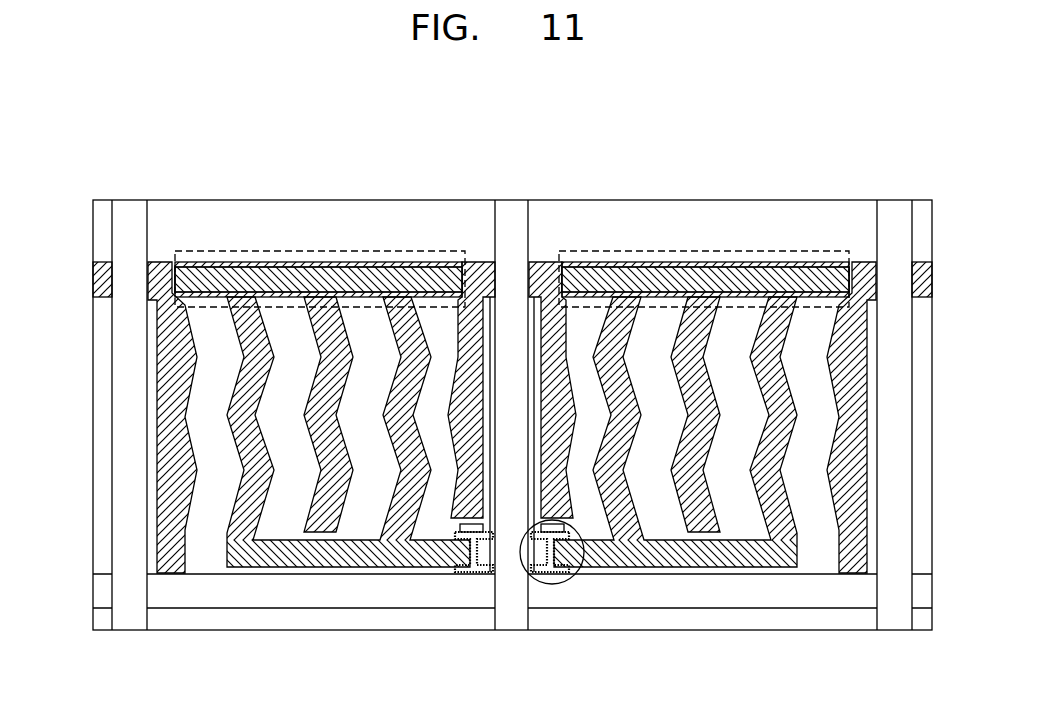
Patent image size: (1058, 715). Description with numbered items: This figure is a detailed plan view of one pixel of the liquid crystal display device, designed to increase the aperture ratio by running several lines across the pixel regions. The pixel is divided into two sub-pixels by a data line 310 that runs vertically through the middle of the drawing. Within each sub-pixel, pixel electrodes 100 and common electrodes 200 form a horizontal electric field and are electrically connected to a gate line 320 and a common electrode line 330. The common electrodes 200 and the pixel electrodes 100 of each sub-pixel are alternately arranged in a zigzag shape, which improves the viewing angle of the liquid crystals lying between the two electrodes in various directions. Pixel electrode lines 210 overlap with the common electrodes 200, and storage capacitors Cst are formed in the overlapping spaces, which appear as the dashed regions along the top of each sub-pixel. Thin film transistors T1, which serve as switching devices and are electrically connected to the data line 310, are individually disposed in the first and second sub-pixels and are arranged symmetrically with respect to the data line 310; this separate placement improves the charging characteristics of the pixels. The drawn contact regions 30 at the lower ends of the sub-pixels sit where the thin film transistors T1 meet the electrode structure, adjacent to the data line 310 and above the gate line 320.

The pixel electrode 100 is at (242, 308).
The common electrode 200 is at (160, 262).
The pixel electrode line 210 is at (212, 278).
The storage capacitor Cst is at (352, 251).
The contact (drain electrode contact) 30 is at (459, 575).
The thin film transistor T1 is at (546, 592).
The data line 310 is at (510, 608).
The gate line 320 is at (273, 598).
The common electrode line 330 is at (105, 262).